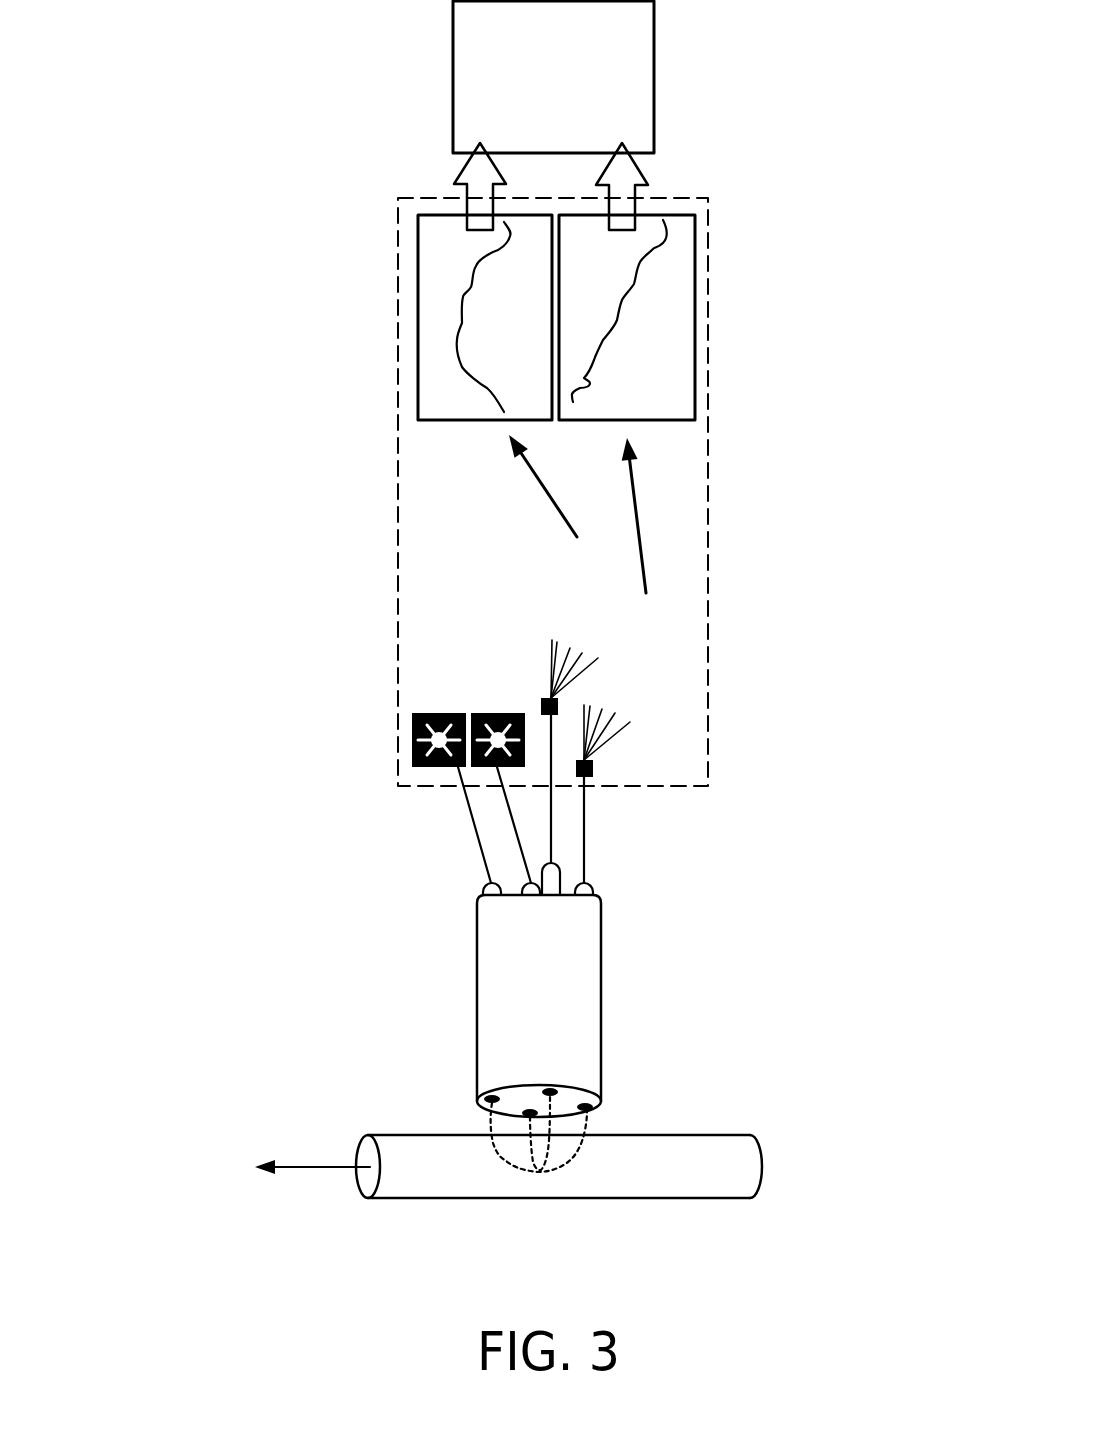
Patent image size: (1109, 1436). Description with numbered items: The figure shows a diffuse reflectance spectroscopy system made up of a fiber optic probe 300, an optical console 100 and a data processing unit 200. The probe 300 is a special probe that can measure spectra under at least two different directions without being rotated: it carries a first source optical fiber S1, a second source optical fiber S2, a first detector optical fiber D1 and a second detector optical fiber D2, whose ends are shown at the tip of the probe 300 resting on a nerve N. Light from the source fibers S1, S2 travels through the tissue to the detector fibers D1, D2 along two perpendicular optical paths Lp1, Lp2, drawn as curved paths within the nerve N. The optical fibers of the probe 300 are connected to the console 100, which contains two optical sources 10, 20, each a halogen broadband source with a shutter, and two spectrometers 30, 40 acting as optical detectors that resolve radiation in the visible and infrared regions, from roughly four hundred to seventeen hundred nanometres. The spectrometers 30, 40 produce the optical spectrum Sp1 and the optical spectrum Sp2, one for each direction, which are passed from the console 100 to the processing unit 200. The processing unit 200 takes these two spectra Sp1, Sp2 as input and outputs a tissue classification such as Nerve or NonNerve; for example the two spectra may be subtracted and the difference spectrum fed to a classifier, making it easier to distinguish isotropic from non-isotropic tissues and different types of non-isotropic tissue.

The processing unit 200 is at (654, 88).
The console 100 is at (398, 553).
The optical spectrum 1 Sp1 is at (462, 293).
The optical spectrum 2 Sp2 is at (621, 310).
The optical source 10 is at (443, 713).
The optical source 20 is at (502, 713).
The spectrometer 30 is at (573, 647).
The spectrometer 40 is at (602, 708).
The probe 300 is at (602, 970).
The first source optical fiber S1 is at (474, 1090).
The second source optical fiber S2 is at (508, 1112).
The first detector optical fiber D1 is at (606, 1098).
The second detector optical fiber D2 is at (566, 1085).
The optical path 1 Lp1 is at (577, 1171).
The optical path 2 Lp2 is at (522, 1167).
The nerve N is at (508, 1166).